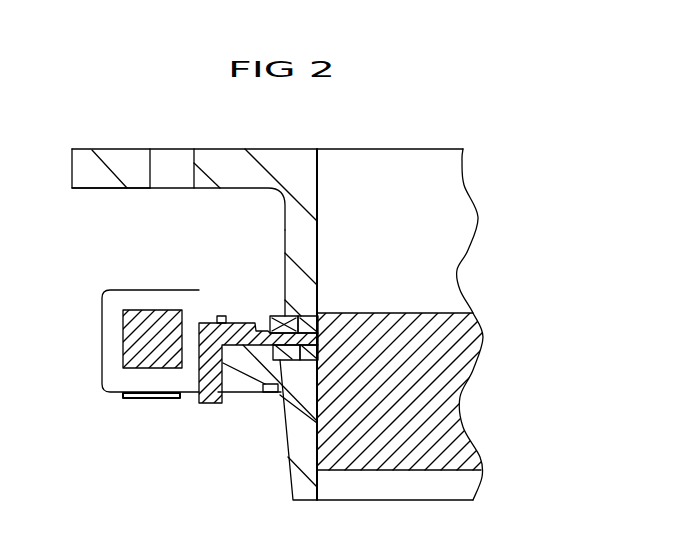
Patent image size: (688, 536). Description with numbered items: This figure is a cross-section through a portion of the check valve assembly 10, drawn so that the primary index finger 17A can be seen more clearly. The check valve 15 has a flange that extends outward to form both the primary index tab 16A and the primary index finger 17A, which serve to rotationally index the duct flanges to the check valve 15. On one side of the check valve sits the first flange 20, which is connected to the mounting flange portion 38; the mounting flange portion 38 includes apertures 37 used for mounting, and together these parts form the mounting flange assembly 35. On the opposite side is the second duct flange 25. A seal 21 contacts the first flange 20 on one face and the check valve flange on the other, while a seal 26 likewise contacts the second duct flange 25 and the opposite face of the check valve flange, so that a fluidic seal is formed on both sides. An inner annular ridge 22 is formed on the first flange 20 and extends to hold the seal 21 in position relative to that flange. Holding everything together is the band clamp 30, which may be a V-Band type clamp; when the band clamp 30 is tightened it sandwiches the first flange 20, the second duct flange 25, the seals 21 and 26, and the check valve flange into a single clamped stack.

The check valve assembly 10 is at (493, 141).
The check valve 15 is at (455, 375).
The primary index tab 16A is at (223, 318).
The primary index finger 17A is at (213, 384).
The first flange 20 is at (302, 223).
The seal 21 is at (277, 316).
The inner annular ridge 22 is at (262, 329).
The second duct flange 25 is at (300, 450).
The seal 26 is at (273, 385).
The band clamp 30 is at (102, 390).
The mounting flange assembly 35 is at (97, 187).
The apertures 37 is at (174, 165).
The mounting flange portion 38 is at (112, 162).